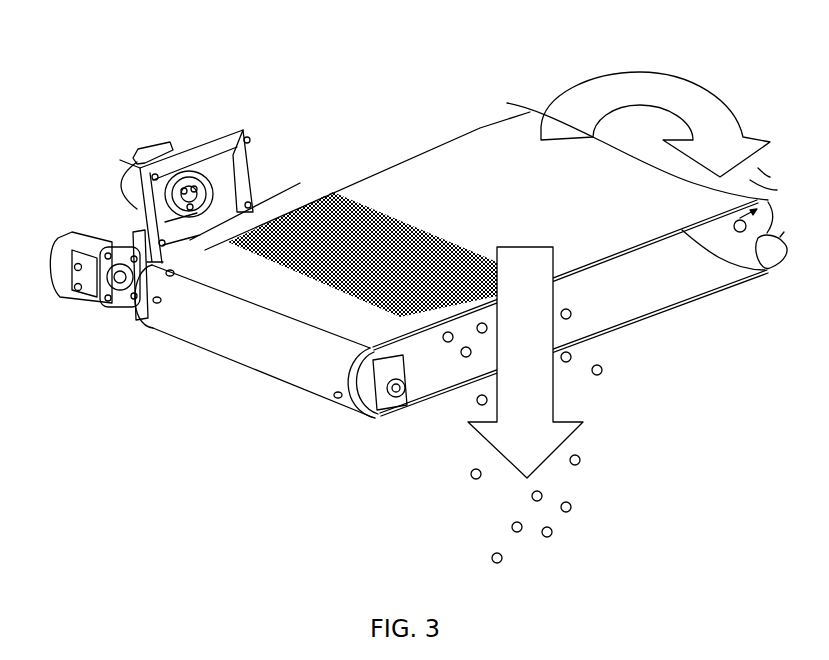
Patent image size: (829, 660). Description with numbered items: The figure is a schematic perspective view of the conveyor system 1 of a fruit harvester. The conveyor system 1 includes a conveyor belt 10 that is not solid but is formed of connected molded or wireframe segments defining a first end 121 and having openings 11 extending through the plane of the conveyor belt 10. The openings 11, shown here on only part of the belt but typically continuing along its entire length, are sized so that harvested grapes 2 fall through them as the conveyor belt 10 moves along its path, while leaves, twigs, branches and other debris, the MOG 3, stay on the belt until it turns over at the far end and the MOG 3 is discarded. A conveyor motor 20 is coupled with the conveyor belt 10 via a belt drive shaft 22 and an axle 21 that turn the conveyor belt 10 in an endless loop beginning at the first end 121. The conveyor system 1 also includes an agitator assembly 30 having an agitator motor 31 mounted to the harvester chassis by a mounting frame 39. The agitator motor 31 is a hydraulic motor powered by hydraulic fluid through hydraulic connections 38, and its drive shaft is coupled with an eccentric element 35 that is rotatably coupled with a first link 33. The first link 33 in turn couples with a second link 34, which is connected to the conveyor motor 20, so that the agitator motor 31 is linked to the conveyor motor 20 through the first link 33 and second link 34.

The conveyor system 1 is at (449, 244).
The harvested grapes 2 is at (478, 506).
The MOG 3 is at (765, 290).
The conveyor belt 10 is at (485, 110).
The openings 11 is at (368, 192).
The conveyor motor 20 is at (65, 262).
The axle 21 is at (400, 408).
The belt drive shaft 22 is at (125, 287).
The agitator assembly 30 is at (193, 166).
The agitator motor 31 is at (127, 182).
The first link 33 is at (235, 196).
The second link 34 is at (137, 233).
The eccentric element 35 is at (228, 160).
The hydraulic connections 38 is at (143, 150).
The mounting frame 39 is at (245, 178).
The first end 121 is at (237, 357).